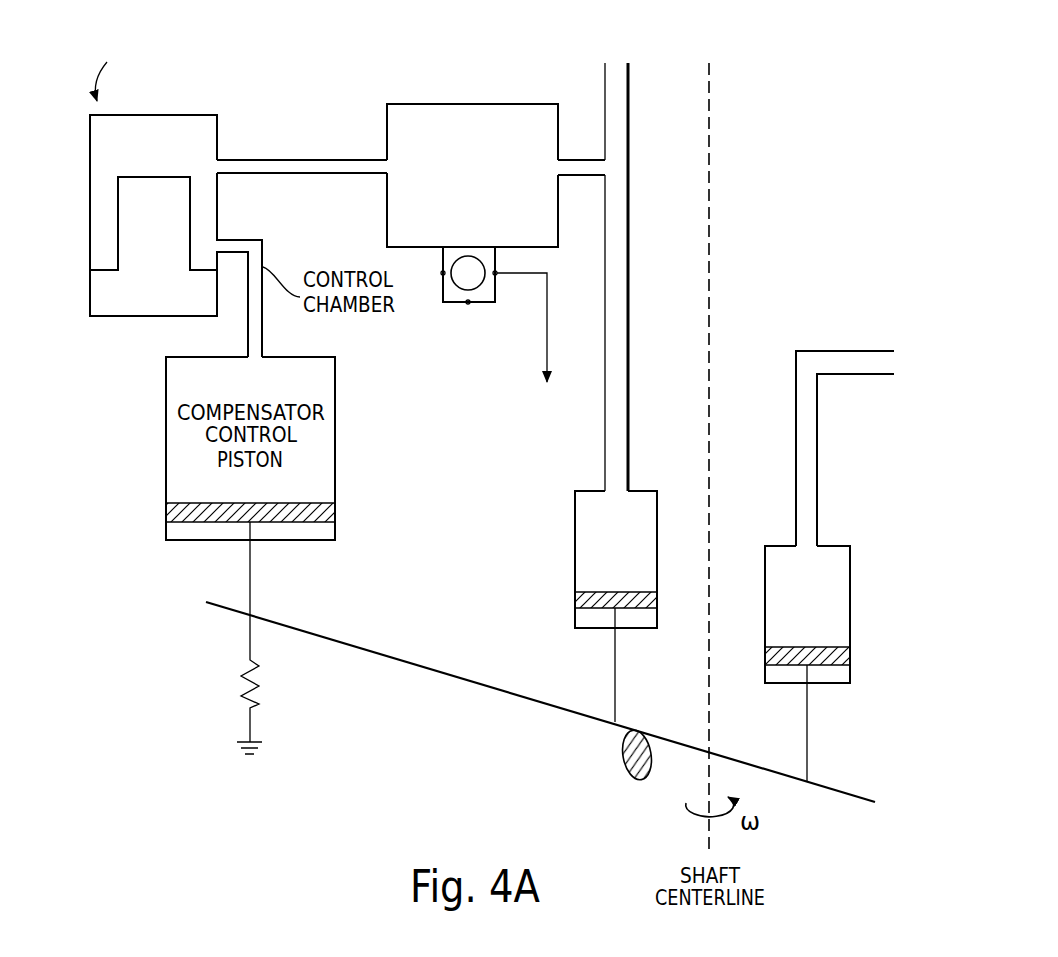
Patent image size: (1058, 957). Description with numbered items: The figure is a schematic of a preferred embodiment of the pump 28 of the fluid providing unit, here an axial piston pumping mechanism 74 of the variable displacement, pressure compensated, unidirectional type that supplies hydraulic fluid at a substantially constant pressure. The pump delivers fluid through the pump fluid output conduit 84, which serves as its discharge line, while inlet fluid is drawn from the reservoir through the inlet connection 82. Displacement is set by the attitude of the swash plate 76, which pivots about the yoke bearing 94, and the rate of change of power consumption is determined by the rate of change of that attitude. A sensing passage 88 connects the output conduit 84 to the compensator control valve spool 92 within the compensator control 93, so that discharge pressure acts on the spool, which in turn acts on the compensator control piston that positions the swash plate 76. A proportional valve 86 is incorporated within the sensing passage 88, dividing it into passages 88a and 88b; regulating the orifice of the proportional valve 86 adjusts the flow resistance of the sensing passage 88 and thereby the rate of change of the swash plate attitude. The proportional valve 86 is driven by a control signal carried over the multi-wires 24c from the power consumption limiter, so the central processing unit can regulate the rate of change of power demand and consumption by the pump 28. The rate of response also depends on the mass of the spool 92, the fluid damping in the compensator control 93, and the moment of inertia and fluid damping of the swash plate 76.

The pump 28 is at (828, 157).
The multi-wires 24c is at (547, 353).
The axial piston pumping mechanism 74 is at (772, 97).
The swash plate 76 is at (443, 671).
The inlet passage from reservoir 82 is at (848, 350).
The pump fluid output conduit 84 is at (630, 77).
The proportional valve 86 is at (482, 103).
The sensing passage 88 is at (296, 68).
The passage 88a is at (268, 175).
The passage 88b is at (583, 160).
The compensator control valve spool 92 is at (154, 194).
The compensator control 93 is at (78, 193).
The yoke bearing 94 is at (623, 763).